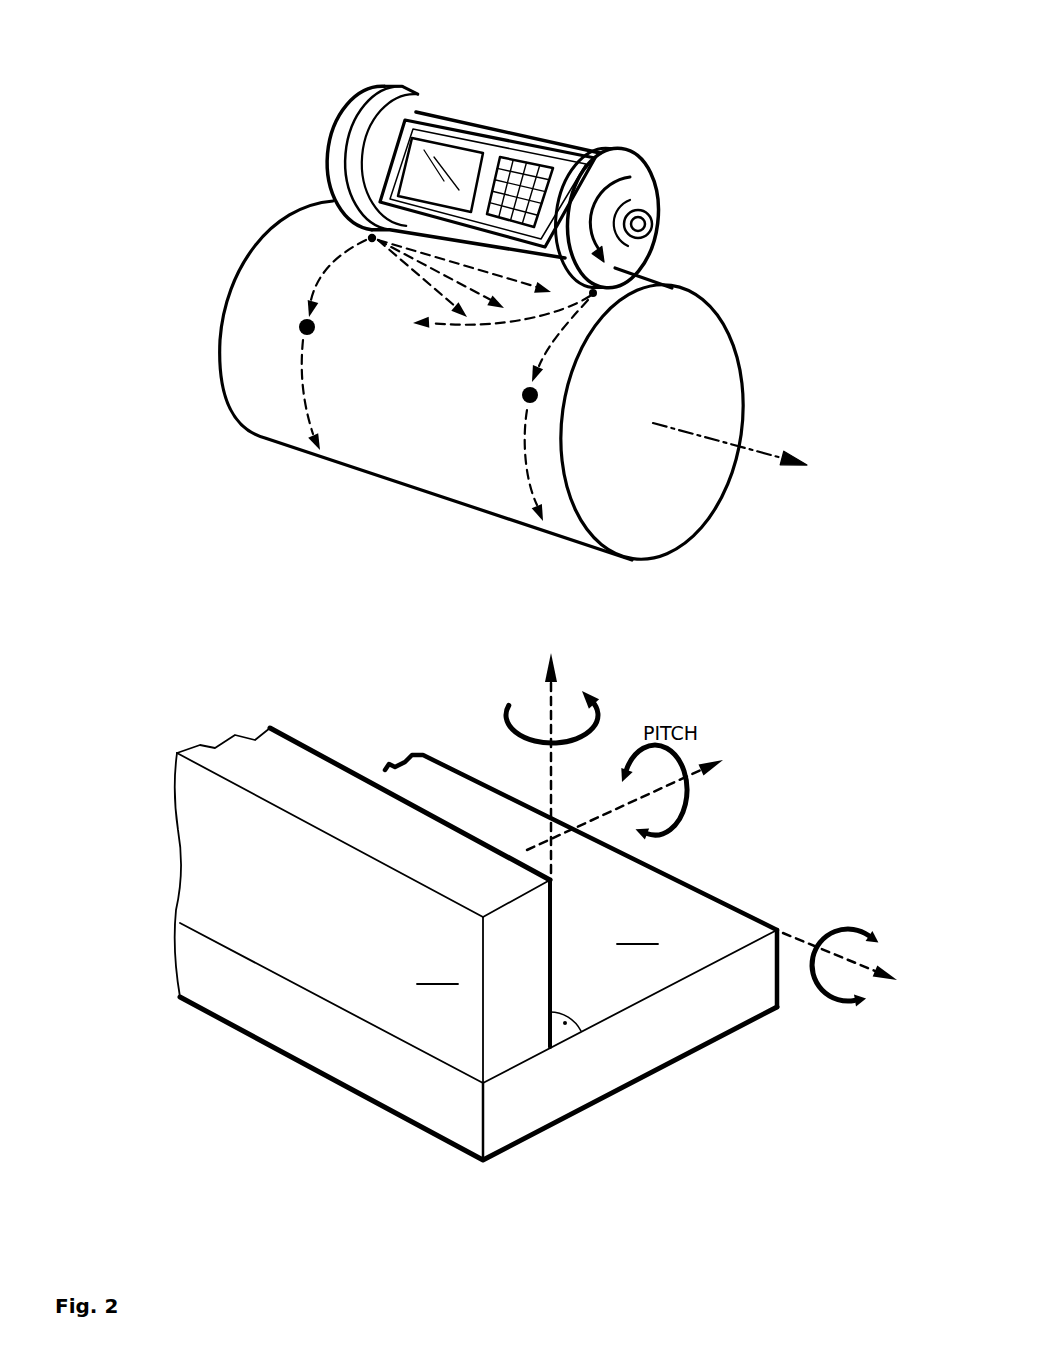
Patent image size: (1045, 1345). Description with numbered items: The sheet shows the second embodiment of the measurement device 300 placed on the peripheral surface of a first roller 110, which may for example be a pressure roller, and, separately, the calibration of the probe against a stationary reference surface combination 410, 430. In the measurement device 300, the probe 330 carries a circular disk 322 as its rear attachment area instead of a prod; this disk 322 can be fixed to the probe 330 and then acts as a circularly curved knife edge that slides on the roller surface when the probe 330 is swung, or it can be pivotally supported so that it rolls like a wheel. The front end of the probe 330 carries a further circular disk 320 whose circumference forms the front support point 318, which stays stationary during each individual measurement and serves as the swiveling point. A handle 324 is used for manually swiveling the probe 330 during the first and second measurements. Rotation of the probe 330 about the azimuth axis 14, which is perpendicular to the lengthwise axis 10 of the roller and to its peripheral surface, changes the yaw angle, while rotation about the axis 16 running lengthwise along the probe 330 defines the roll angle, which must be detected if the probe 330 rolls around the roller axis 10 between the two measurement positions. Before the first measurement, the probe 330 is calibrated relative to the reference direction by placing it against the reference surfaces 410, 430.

In FIG. 2A, the first roller 110 is at (230, 297).
In FIG. 2A, the lengthwise axis of the roller 10 is at (763, 447).
In FIG. 2A, the measurement device 300 is at (545, 95).
In FIG. 2A, the circular disk 320 is at (327, 157).
In FIG. 2A, the circular disk 322 is at (620, 147).
In FIG. 2A, the handle 324 is at (648, 227).
In FIG. 2A, the probe 330 is at (482, 128).
In FIG. 2A, the front support point 318 is at (368, 238).
In FIG. 2B, the stationary reference surface 410 is at (362, 905).
In FIG. 2B, the stationary reference surface 430 is at (478, 957).
In FIG. 2B, the azimuth axis 14 is at (550, 797).
In FIG. 2B, the roll axis 16 is at (796, 933).